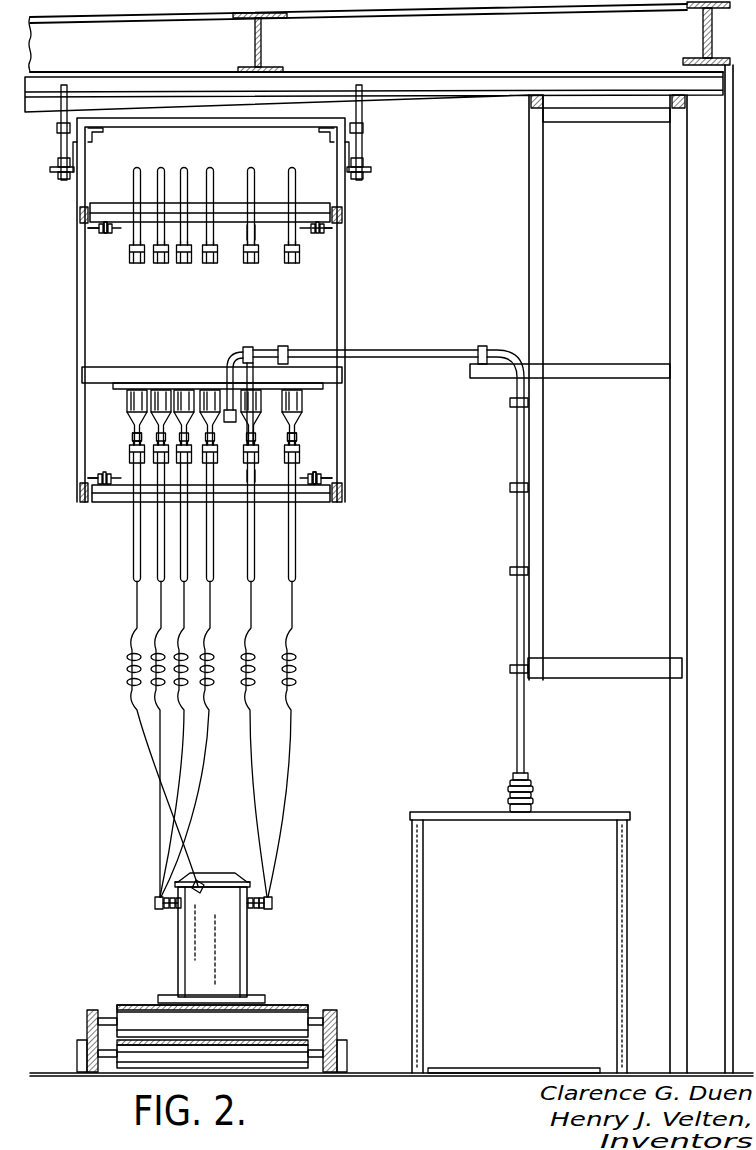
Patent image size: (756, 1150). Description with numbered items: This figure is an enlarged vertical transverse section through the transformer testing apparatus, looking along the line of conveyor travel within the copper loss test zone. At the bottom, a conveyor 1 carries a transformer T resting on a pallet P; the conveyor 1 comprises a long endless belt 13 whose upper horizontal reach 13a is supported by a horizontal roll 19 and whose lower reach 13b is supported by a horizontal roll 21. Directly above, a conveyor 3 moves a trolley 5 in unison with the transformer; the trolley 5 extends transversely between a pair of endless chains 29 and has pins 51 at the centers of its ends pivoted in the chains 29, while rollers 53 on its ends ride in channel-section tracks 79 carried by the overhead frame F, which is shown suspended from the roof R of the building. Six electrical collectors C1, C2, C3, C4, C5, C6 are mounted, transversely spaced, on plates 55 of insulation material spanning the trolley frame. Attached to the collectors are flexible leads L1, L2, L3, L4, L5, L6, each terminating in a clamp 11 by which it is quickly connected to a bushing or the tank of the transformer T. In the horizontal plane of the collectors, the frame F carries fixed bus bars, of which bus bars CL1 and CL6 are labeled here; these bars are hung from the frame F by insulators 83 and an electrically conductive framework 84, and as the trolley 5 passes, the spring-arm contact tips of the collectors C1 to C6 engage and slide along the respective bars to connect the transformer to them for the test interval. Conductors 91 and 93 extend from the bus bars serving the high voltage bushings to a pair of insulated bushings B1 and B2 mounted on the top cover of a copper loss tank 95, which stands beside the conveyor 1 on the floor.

The roof R is at (405, 78).
The overhead frame F is at (70, 331).
The trolley 5 is at (128, 201).
The channel-section track 79 is at (80, 206).
The roller 53 is at (80, 215).
The pin 51 is at (98, 228).
The conveyor 3 is at (104, 241).
The endless chain 29 is at (108, 235).
The plate of insulation material 55 is at (250, 232).
The lead L1 is at (134, 178).
The lead L2 is at (158, 172).
The lead L3 is at (183, 170).
The lead L4 is at (212, 170).
The lead L5 is at (252, 170).
The lead L6 is at (296, 176).
The electrical collector C1 is at (135, 265).
The electrical collector C2 is at (162, 265).
The electrical collector C3 is at (184, 265).
The electrical collector C4 is at (210, 265).
The electrical collector C5 is at (252, 265).
The electrical collector C6 is at (292, 265).
The insulator 83 is at (215, 416).
The electrically conductive framework 84 is at (134, 426).
The bus bar CL1 is at (134, 440).
The bus bar CL6 is at (297, 440).
The conductor 91 is at (254, 347).
The conductor 93 is at (232, 362).
The clamp 11 is at (155, 900).
The transformer T is at (245, 945).
The pallet P is at (170, 995).
The upper reach 13a is at (135, 1005).
The lower reach 13b is at (125, 1040).
The endless belt 13 is at (212, 1005).
The conveyor 1 is at (212, 1033).
The horizontal roll 19 is at (296, 1020).
The horizontal roll 21 is at (201, 1040).
The copper loss tank 95 is at (415, 872).
The insulated bushing B1 is at (508, 795).
The insulated bushing B2 is at (512, 778).